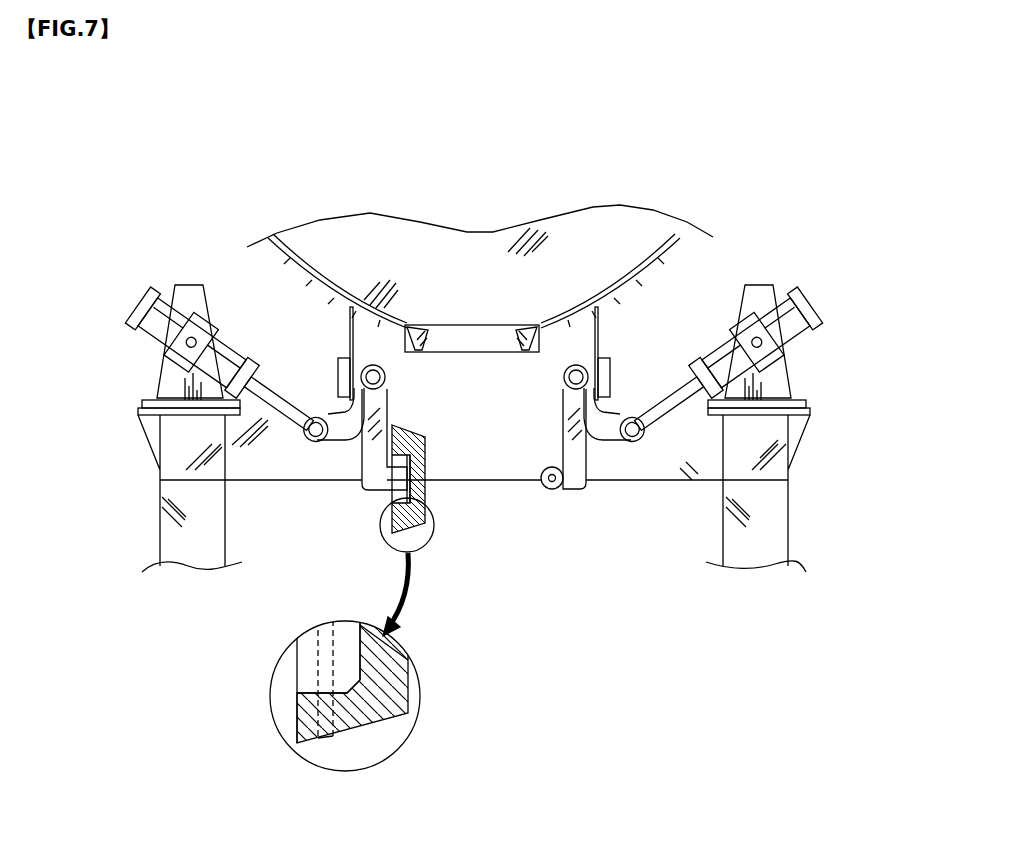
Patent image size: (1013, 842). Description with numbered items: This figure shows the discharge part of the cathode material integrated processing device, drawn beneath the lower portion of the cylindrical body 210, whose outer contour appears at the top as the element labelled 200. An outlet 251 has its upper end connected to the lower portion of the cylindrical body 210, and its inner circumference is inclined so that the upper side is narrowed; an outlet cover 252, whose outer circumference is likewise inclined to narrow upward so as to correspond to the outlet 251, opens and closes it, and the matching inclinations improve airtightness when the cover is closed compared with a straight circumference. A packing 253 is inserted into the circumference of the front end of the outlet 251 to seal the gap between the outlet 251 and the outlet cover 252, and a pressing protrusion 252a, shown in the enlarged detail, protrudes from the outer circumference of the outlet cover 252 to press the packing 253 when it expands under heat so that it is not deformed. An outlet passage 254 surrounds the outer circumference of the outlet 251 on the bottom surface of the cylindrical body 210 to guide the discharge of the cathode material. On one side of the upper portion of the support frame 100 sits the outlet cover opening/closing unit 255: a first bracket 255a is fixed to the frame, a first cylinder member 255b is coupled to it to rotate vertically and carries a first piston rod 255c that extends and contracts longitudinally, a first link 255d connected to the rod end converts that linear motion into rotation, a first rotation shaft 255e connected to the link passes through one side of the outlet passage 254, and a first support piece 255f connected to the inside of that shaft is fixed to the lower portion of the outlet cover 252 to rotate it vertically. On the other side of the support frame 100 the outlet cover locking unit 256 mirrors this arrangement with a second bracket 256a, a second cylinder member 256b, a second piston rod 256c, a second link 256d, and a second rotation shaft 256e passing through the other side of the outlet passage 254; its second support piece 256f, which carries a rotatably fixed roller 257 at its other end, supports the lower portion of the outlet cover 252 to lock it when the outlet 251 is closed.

The support frame 100 is at (152, 511).
The cover 200 is at (668, 207).
The cylindrical body 210 is at (600, 333).
The outlet 251 is at (468, 333).
The outlet cover 252 is at (430, 492).
The pressing protrusion 252a is at (327, 740).
The packing 253 is at (418, 345).
The outlet passage 254 is at (597, 310).
The outlet cover opening/closing unit 255 is at (201, 310).
The first bracket 255a is at (183, 290).
The first cylinder member 255b is at (152, 345).
The first piston rod 255c is at (277, 390).
The first link 255d is at (340, 433).
The first rotation shaft 255e is at (372, 370).
The first support piece 255f is at (373, 492).
The outlet cover locking unit 256 is at (743, 310).
The second bracket 256a is at (765, 290).
The second cylinder member 256b is at (798, 345).
The second piston rod 256c is at (671, 390).
The second link 256d is at (606, 433).
The second rotation shaft 256e is at (576, 368).
The second support piece 256f is at (576, 492).
The roller 257 is at (552, 492).